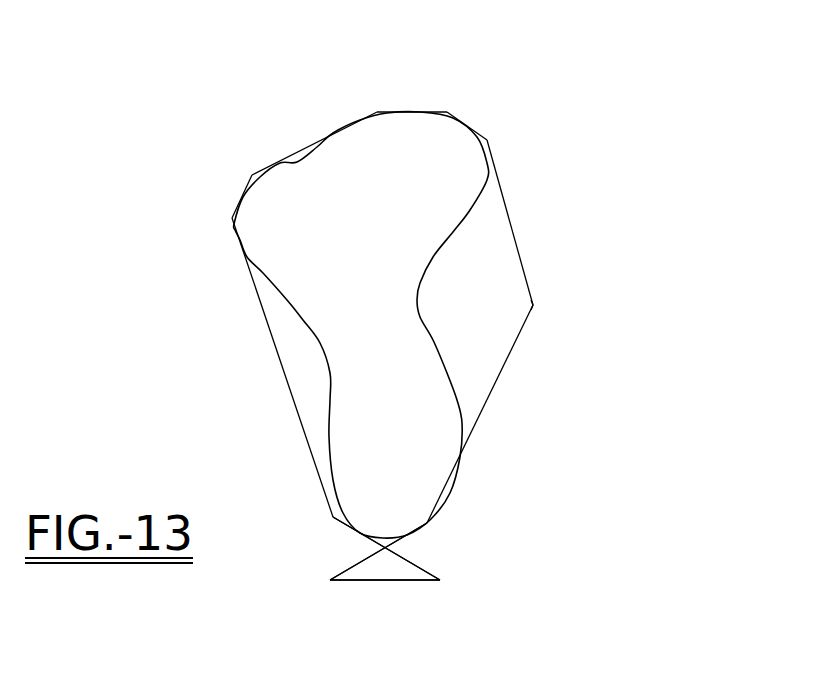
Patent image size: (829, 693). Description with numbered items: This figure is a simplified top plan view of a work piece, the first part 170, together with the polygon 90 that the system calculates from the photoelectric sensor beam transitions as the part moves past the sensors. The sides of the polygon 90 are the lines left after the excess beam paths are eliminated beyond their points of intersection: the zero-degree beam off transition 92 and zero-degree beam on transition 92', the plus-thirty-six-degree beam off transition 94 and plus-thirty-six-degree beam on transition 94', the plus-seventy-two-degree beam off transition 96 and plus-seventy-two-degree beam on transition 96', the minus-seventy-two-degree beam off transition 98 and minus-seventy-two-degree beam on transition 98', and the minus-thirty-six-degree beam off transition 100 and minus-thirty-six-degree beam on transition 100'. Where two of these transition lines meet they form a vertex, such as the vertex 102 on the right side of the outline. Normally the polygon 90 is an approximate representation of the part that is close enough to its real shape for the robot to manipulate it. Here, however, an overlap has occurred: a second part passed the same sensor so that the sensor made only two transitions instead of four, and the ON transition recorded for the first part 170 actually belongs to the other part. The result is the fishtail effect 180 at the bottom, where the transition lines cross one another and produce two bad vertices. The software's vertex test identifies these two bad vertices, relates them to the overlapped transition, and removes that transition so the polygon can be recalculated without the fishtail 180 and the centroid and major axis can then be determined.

The polygon 90 is at (562, 263).
The 0° beam off transition 92 is at (404, 603).
The 0° beam on transition 92' is at (388, 75).
The +36° beam off transition 94 is at (297, 132).
The +36° beam on transition 94' is at (424, 551).
The +72° beam off transition 96 is at (202, 195).
The +72° beam on transition 96' is at (518, 414).
The −72° beam off transition 98 is at (537, 222).
The −72° beam on transition 98' is at (255, 367).
The −36° beam off transition 100 is at (505, 105).
The −36° beam on transition 100' is at (351, 548).
The vertex 102 is at (533, 305).
The first part 170 is at (372, 275).
The fishtail effect 180 is at (382, 567).